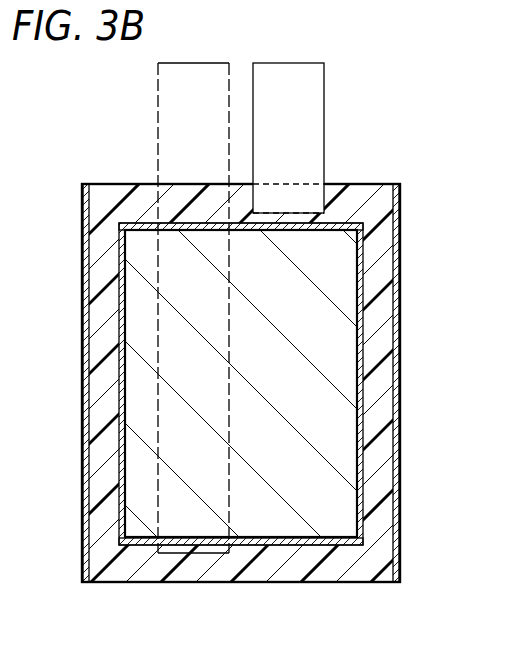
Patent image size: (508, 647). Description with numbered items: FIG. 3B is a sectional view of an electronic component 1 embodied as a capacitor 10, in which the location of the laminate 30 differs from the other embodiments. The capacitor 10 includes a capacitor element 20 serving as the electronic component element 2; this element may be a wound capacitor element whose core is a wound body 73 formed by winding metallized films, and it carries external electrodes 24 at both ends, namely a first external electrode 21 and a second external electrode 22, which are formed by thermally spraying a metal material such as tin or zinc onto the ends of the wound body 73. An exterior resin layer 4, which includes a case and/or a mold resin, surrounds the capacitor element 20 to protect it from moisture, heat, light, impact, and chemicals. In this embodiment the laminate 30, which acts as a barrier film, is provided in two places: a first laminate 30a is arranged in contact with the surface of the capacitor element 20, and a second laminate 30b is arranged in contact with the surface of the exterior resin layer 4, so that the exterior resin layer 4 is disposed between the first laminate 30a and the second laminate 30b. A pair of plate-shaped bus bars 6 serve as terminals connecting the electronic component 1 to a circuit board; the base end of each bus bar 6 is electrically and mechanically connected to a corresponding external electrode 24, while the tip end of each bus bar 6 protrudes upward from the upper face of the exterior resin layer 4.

The electronic component 1 is at (73, 510).
The capacitor 10 is at (200, 383).
The electronic component element 2 is at (254, 323).
The capacitor element 20 is at (254, 323).
The exterior resin layer 4 is at (333, 482).
The bus bar 6 is at (172, 113).
The first external electrode 21 is at (273, 388).
The second external electrode 22 is at (273, 388).
The external electrode 24 is at (335, 223).
The laminate 30 is at (277, 383).
The first laminate 30a is at (360, 387).
The second laminate 30b is at (400, 263).
The wound body 73 is at (337, 332).